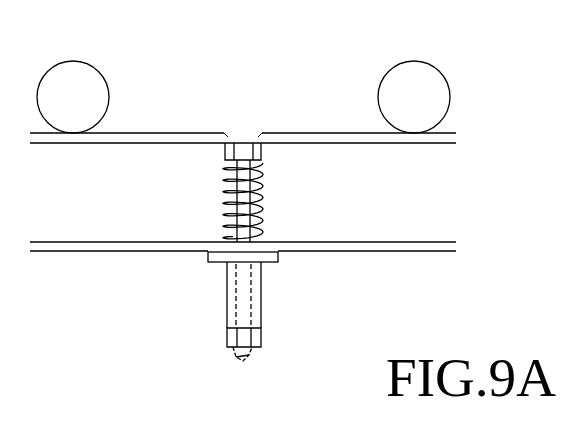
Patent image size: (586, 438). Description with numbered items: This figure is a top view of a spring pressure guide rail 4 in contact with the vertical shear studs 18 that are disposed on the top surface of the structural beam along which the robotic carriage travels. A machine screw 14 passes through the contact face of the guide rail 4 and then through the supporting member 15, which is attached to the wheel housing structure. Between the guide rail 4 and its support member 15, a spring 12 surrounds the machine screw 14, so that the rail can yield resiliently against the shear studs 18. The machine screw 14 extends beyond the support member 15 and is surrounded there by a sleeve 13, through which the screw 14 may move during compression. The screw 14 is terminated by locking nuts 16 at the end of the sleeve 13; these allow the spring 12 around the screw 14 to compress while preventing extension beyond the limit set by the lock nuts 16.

The guide rail 4 is at (328, 133).
The spring 12 is at (224, 186).
The sleeve 13 is at (225, 277).
The machine screw 14 is at (243, 361).
The supporting member 15 is at (336, 251).
The locking nuts 16 is at (226, 334).
The shear studs 18 is at (99, 70).